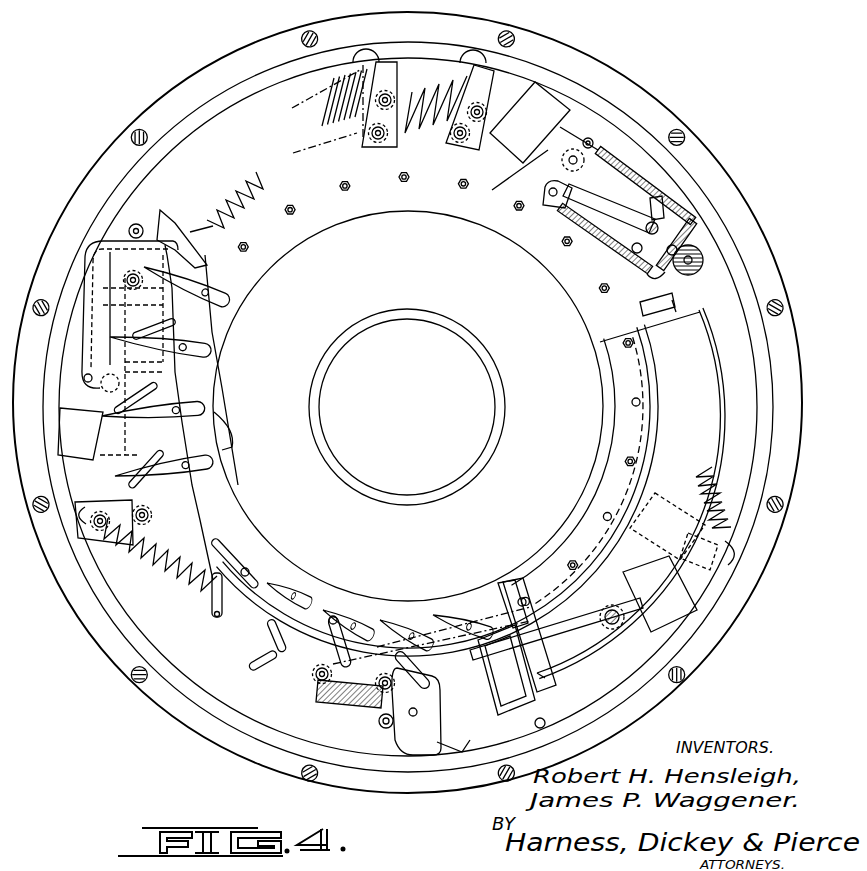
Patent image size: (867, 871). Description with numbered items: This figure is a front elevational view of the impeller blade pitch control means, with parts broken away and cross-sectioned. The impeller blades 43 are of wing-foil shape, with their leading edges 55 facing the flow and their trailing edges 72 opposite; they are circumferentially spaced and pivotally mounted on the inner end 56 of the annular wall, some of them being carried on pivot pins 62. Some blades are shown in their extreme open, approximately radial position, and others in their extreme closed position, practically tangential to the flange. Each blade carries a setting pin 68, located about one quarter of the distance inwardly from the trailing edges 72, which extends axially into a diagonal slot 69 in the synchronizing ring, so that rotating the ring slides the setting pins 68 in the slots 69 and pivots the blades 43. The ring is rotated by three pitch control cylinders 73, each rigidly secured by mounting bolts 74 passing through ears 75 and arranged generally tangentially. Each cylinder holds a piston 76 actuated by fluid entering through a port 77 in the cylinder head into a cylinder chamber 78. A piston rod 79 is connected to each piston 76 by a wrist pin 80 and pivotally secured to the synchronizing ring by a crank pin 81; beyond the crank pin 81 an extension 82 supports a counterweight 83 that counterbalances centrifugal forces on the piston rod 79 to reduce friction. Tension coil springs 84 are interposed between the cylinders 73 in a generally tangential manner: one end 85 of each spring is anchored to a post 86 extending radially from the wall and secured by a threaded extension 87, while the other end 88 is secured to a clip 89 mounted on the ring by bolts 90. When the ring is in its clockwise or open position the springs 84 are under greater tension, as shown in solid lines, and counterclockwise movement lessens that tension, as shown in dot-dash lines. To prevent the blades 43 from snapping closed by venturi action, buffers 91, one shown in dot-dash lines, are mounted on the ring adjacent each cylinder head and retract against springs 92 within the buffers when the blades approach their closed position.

The impeller blades 43 is at (278, 565).
The leading edges 55 is at (214, 418).
The inner end of annular wall 56 is at (380, 600).
The pivot pins 62 is at (631, 406).
The impeller blade setting pins 68 is at (255, 629).
The diagonal slots 69 is at (138, 450).
The trailing edges 72 is at (283, 650).
The pitch control cylinders 73 is at (85, 283).
The mounting bolts 74 is at (705, 240).
The ears 75 is at (578, 149).
The pistons 76 is at (634, 252).
The ports 77 is at (661, 271).
The cylinder chambers 78 is at (700, 213).
The piston rod 79 is at (624, 208).
The wrist pin 80 is at (672, 187).
The crank pins 81 is at (592, 139).
The extension 82 is at (620, 632).
The counterweight 83 is at (593, 357).
The tension coil springs 84 is at (247, 172).
The one end of spring 85 is at (207, 228).
The post 86 is at (232, 232).
The threaded extensions 87 is at (245, 268).
The other end of spring 88 is at (500, 58).
The clip 89 is at (398, 80).
The bolts 90 is at (362, 134).
The buffers 91 is at (380, 727).
The springs 92 is at (328, 704).